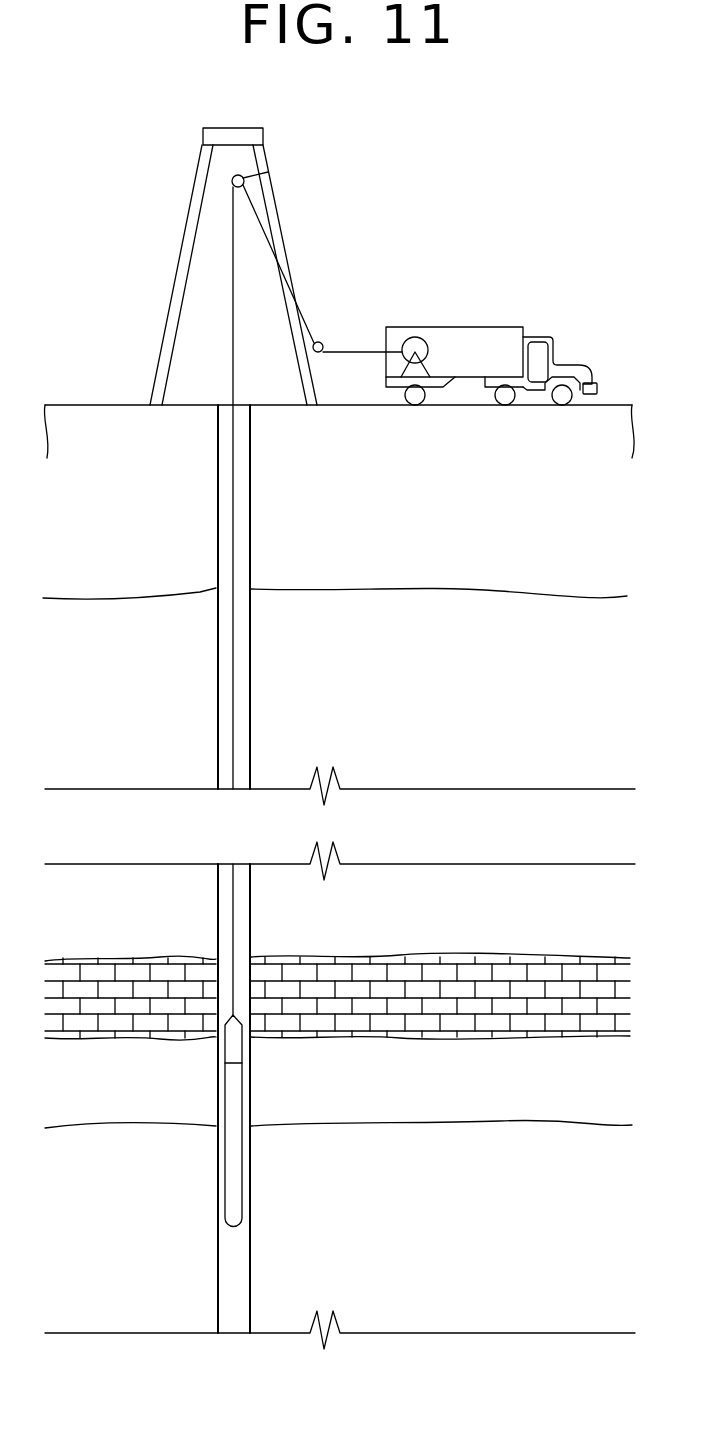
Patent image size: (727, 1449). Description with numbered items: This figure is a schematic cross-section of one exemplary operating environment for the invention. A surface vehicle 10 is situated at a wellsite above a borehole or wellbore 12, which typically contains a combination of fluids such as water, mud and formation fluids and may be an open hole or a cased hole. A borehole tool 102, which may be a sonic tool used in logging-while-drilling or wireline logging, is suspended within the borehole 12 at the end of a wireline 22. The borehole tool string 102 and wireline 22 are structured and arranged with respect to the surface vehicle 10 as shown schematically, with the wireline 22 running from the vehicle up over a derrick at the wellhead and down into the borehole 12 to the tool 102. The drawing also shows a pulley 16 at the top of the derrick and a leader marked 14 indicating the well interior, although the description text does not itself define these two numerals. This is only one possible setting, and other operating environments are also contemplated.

The surface vehicle 10 is at (465, 343).
The borehole 12 is at (252, 632).
The wellbore 14 is at (228, 692).
The pulley sheave 16 is at (231, 182).
The wireline 22 is at (235, 733).
The borehole tool 102 is at (231, 1175).